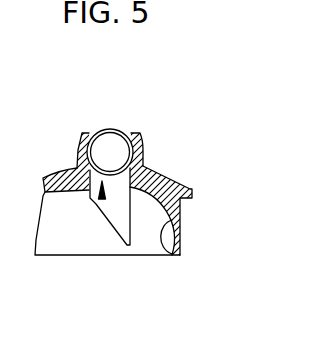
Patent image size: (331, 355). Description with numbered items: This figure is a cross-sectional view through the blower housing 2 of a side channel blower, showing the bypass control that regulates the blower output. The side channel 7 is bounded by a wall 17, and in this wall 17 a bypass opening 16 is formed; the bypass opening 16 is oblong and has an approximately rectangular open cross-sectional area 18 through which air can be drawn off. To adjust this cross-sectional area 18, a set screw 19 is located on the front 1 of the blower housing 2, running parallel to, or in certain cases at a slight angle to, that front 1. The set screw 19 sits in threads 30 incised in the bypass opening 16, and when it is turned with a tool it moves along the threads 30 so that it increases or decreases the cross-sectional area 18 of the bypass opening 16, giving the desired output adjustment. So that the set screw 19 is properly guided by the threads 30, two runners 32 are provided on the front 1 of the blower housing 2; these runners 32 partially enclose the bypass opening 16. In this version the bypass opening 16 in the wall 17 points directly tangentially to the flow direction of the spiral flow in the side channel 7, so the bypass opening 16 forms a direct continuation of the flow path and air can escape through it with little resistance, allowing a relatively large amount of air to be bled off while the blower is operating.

The front 1 is at (163, 173).
The blower housing 2 is at (171, 173).
The side channel 7 is at (141, 228).
The bypass opening 16 is at (117, 176).
The wall 17 is at (162, 243).
The cross-sectional area 18 is at (97, 203).
The set screw 19 is at (109, 147).
The threads 30 is at (145, 153).
The runners 32 is at (80, 148).